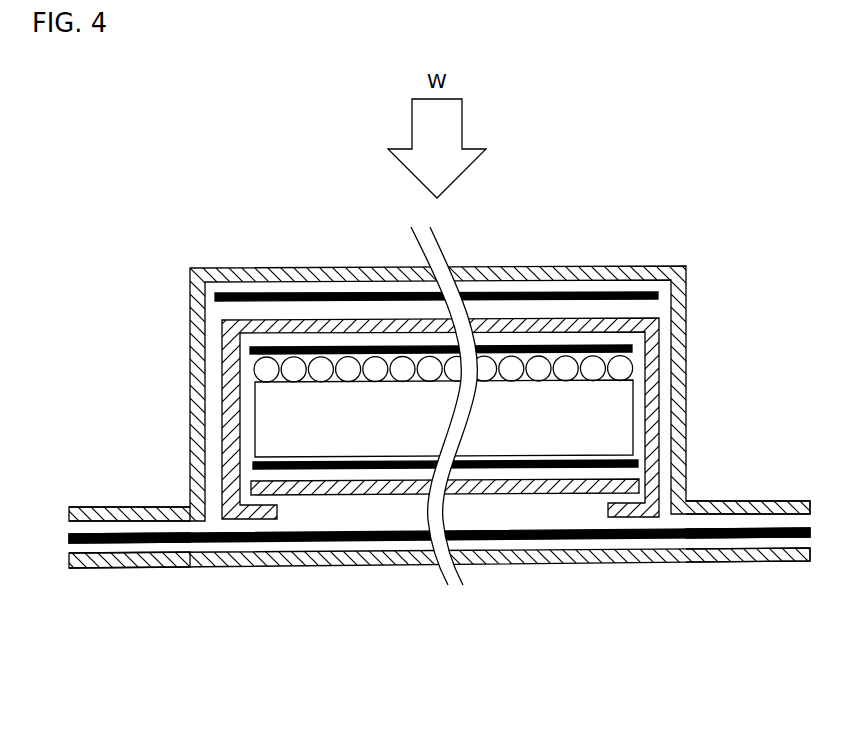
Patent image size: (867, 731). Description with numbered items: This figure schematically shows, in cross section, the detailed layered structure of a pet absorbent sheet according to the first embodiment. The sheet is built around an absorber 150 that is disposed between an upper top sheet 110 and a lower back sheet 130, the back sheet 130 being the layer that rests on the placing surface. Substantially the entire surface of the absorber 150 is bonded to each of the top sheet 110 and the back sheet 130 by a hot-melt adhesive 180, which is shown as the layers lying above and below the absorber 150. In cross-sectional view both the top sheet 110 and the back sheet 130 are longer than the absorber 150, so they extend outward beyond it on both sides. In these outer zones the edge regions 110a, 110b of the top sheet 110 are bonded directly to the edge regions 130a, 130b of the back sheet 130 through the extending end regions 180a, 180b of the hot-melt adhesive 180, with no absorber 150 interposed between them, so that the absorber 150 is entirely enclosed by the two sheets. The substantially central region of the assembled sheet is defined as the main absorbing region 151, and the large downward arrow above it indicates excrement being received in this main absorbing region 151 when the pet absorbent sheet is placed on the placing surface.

The top sheet 110 is at (580, 265).
The edge region of the top sheet 110a is at (762, 502).
The edge region of the top sheet 110b is at (138, 507).
The back sheet 130 is at (655, 562).
The edge region of the back sheet 130a is at (715, 557).
The edge region of the back sheet 130b is at (128, 568).
The absorber 150 is at (658, 368).
The main absorbing region 151 is at (532, 235).
The hot-melt adhesive 180 is at (632, 292).
The extending end region of the hot-melt adhesive 180a is at (695, 530).
The extending end region of the hot-melt adhesive 180b is at (255, 543).